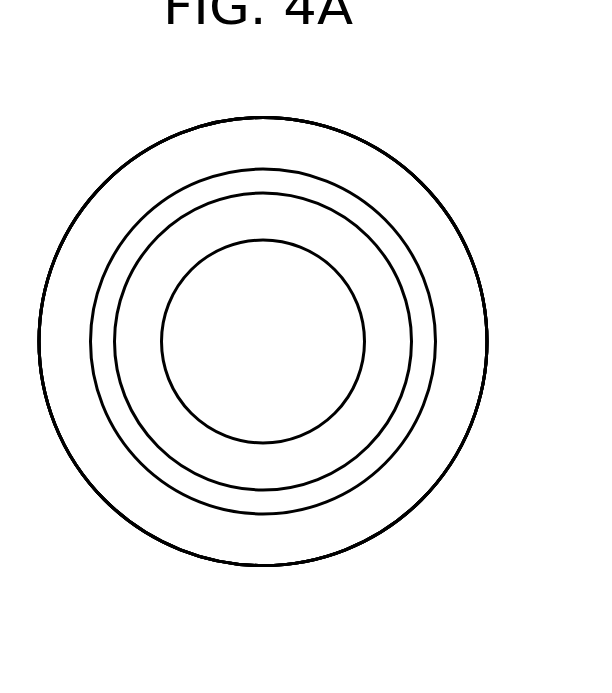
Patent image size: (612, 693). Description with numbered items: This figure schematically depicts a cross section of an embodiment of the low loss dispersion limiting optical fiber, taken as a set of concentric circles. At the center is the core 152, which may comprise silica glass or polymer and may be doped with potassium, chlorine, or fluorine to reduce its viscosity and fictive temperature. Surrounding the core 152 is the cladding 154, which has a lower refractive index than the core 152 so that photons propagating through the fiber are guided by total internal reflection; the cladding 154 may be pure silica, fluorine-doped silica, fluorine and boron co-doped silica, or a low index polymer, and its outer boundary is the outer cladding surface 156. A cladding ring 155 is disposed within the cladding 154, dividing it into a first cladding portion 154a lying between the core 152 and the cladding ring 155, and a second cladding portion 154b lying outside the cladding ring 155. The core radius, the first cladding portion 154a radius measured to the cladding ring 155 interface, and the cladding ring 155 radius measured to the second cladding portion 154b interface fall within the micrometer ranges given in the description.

The core 152 is at (248, 241).
The cladding 154 is at (173, 124).
The first cladding portion 154a is at (318, 217).
The second cladding portion 154b is at (303, 138).
The cladding ring 155 is at (253, 177).
The outer cladding surface 156 is at (115, 170).